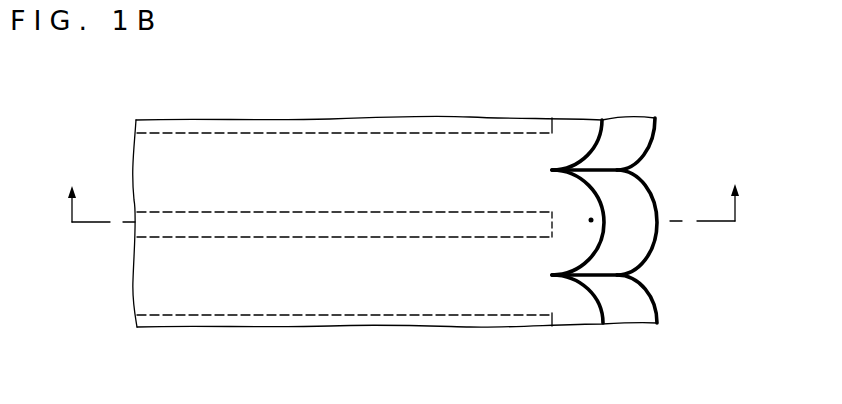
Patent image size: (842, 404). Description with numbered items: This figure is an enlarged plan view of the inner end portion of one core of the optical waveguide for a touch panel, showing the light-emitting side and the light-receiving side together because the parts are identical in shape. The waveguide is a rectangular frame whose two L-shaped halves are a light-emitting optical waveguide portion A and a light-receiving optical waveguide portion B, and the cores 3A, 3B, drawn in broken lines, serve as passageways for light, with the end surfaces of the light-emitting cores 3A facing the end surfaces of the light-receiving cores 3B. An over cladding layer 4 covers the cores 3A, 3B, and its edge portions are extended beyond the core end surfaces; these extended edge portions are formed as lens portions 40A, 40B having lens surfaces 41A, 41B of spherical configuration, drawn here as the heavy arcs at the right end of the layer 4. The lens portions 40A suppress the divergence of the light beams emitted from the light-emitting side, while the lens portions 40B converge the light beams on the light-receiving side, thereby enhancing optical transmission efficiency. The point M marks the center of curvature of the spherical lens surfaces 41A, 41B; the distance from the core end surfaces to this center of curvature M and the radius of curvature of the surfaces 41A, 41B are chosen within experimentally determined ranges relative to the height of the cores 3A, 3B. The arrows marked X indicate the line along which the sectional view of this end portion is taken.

The over cladding layer 4 is at (185, 153).
The light-emitting core 3A is at (286, 218).
The light-receiving core 3B is at (344, 224).
The light-emitting optical waveguide portion A is at (421, 110).
The light-receiving optical waveguide portion B is at (419, 210).
The lens portion 40A is at (578, 195).
The lens portion 40B is at (577, 182).
The lens surface 41A is at (630, 190).
The lens surface 41B is at (661, 182).
The center of curvature M is at (591, 220).
The section line X- X is at (403, 182).